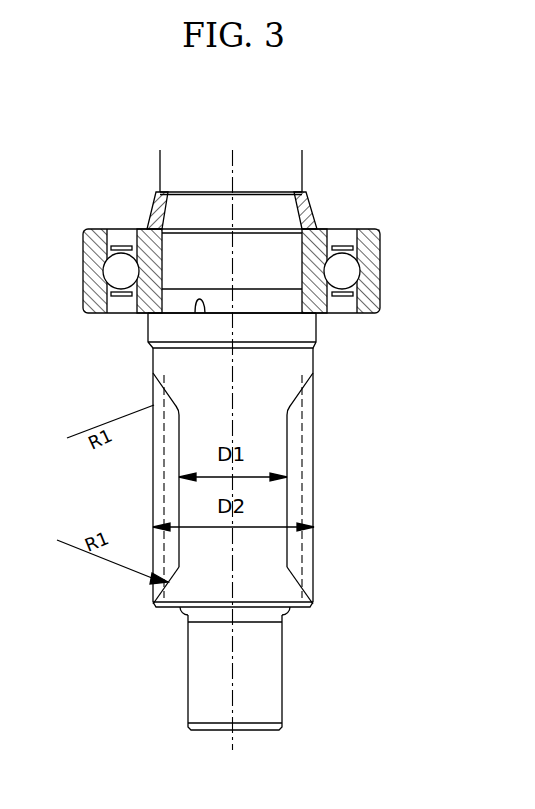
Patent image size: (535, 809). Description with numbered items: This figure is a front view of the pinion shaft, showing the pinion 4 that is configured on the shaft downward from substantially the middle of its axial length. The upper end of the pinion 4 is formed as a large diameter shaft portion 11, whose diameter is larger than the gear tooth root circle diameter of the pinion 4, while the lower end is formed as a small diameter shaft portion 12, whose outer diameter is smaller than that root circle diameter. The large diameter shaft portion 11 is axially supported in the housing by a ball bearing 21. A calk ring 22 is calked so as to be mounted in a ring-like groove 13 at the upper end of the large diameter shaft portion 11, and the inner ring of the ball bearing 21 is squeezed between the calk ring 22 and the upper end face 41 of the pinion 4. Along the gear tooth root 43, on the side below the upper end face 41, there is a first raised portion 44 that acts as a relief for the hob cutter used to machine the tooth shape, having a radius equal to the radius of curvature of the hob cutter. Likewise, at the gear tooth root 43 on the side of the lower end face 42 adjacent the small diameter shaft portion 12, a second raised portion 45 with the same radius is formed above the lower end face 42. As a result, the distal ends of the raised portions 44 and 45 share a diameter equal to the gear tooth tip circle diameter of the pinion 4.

The pinion 4 is at (185, 500).
The large diameter shaft portion 11 is at (176, 262).
The small diameter shaft portion 12 is at (202, 673).
The ring-like groove 13 is at (268, 222).
The ball bearing 21 is at (352, 271).
The calk ring 22 is at (308, 227).
The upper end face 41 is at (197, 313).
The lower end face 42 is at (222, 613).
The gear tooth root 43 is at (179, 426).
The first raised portion 44 is at (156, 400).
The second raised portion 45 is at (158, 601).